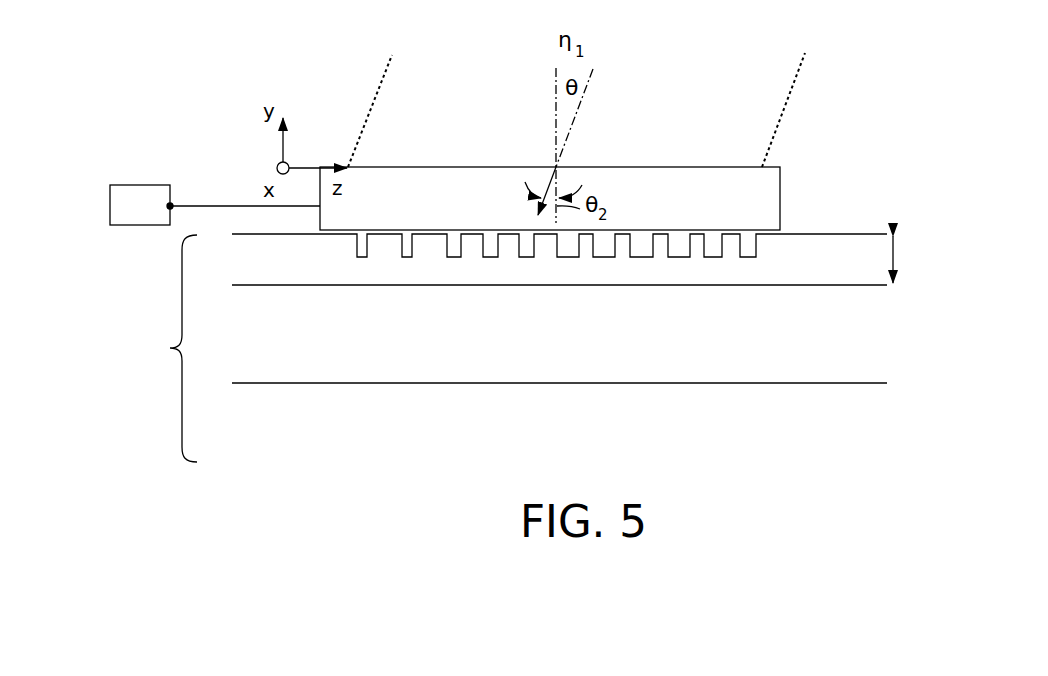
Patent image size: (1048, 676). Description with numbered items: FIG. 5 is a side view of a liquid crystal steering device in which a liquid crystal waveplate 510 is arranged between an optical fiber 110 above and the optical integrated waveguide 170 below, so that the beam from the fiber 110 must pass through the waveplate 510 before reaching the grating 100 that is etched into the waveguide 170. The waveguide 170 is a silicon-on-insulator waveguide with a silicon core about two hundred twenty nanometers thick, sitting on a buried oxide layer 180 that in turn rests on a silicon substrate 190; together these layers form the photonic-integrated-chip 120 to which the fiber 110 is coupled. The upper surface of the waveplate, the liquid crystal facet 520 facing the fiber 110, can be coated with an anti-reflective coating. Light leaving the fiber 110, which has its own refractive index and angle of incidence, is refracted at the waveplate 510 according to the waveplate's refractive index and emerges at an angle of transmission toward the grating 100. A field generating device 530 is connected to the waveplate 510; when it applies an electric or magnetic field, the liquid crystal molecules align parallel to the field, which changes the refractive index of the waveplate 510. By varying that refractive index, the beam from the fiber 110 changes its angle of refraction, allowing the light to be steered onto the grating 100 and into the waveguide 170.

The grating 100 is at (515, 262).
The optical fiber 110 is at (484, 72).
The photonic-integrated-chip 120 is at (170, 348).
The waveguide 170 is at (945, 242).
The buried oxide layer 180 is at (895, 326).
The silicon substrate 190 is at (894, 412).
The liquid crystal waveplate 510 is at (708, 203).
The liquid crystal facet 520 is at (717, 167).
The field generating device 530 is at (158, 215).